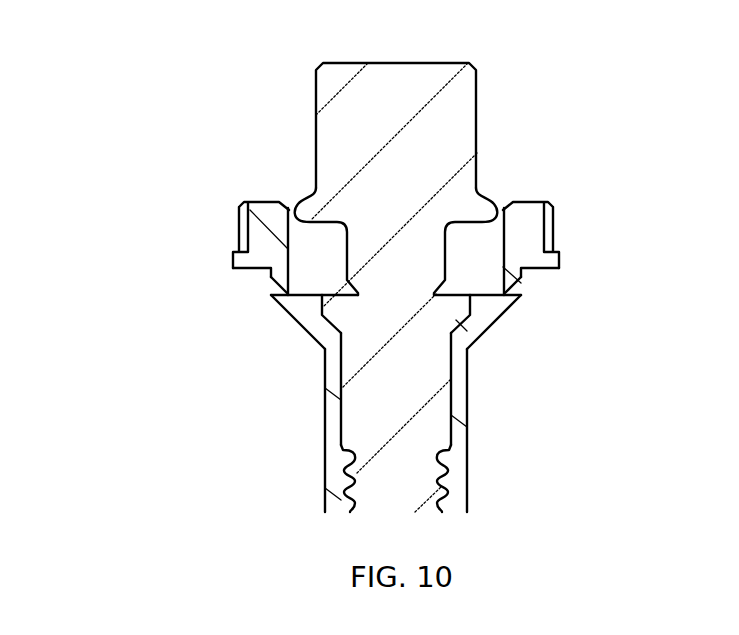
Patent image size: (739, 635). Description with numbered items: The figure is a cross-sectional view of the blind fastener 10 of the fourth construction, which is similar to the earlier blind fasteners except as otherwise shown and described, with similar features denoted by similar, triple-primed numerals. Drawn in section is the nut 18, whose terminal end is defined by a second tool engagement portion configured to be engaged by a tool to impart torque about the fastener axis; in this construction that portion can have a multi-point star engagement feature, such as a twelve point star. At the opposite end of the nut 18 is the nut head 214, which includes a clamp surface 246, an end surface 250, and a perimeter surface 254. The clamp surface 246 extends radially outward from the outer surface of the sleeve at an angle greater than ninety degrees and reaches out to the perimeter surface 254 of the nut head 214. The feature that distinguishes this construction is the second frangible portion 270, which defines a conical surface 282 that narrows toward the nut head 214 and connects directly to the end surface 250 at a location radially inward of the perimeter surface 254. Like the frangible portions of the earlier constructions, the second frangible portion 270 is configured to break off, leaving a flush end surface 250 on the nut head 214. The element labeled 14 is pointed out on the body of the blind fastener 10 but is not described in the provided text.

The blind fastener 10 is at (213, 175).
The connector body 14 is at (395, 88).
The nut 18 is at (325, 412).
The nut head 214 is at (490, 312).
The clamp surface 246 is at (304, 327).
The end surface 250 is at (473, 265).
The perimeter surface 254 is at (271, 297).
The second frangible portion 270 is at (279, 272).
The conical surface 282 is at (275, 283).